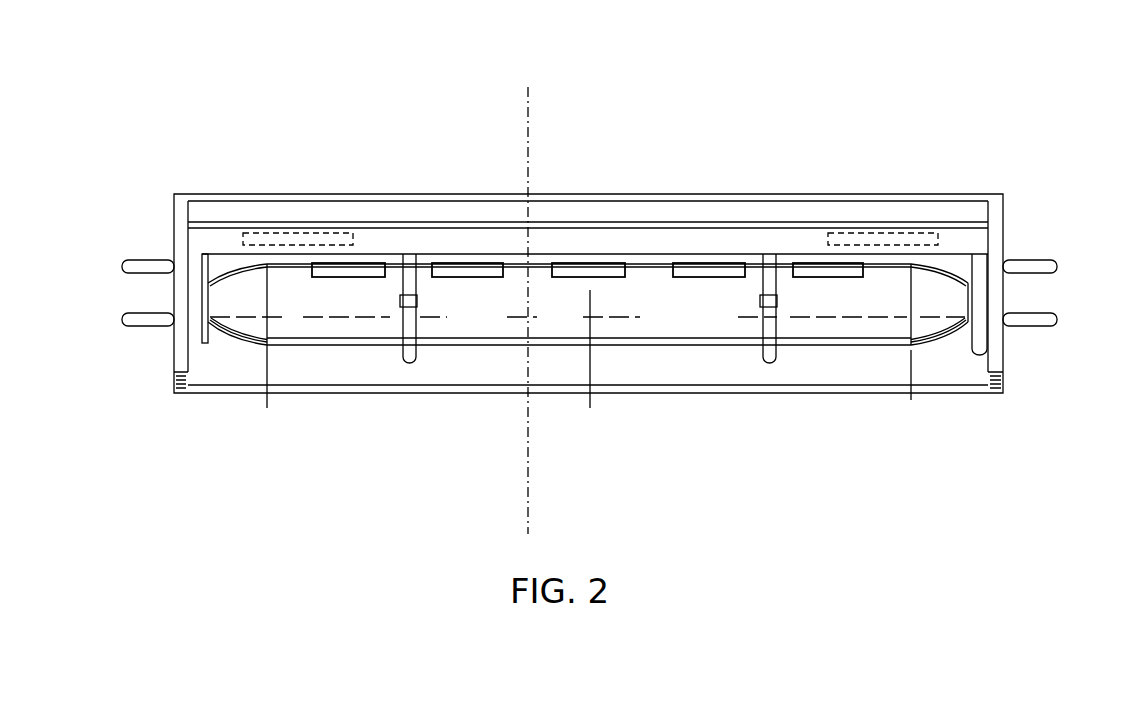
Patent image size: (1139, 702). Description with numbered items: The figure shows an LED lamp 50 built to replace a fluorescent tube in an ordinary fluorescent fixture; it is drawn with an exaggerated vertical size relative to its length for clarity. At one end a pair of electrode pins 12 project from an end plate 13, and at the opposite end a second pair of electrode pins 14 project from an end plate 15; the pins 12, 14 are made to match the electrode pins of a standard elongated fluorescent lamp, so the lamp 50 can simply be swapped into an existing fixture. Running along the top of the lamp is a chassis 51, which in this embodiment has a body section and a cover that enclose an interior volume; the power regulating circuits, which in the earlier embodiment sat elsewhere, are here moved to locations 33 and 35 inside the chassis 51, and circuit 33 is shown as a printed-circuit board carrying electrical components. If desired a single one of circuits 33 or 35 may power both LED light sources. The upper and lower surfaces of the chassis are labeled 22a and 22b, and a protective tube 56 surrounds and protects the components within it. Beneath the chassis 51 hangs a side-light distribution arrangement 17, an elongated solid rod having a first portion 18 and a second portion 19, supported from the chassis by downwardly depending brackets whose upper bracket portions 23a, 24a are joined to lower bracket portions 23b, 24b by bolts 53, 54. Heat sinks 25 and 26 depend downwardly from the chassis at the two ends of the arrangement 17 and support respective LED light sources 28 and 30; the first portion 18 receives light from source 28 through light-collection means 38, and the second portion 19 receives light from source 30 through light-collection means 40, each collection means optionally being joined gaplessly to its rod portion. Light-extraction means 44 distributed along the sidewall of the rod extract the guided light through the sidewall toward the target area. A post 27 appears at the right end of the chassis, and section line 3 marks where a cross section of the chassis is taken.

The lamp 50 is at (185, 125).
The end plate 13 is at (174, 215).
The end plate 15 is at (1003, 220).
The electrode pins 12 is at (122, 266).
The electrode pins 14 is at (1057, 267).
The heat sink 25 is at (193, 362).
The heat sink 26 is at (1003, 340).
The right support post 27 is at (980, 357).
The LED light source 28 is at (208, 282).
The LED light source 30 is at (955, 300).
The protective tube 56 is at (290, 194).
The chassis 51 is at (247, 214).
The lower board surface 22a is at (663, 240).
The upper board surface 22b is at (567, 222).
The power regulating circuit 33 is at (320, 232).
The power regulating circuit 35 is at (892, 232).
The light-extraction means 44 is at (348, 263).
The side-light distribution arrangement 17 is at (582, 325).
The light-collection means 38 is at (252, 345).
The light-collection means 40 is at (927, 342).
The upper bracket portion 23a is at (417, 291).
The lower bracket portion 23b is at (417, 352).
The upper bracket portion 24a is at (762, 291).
The lower bracket portion 24b is at (762, 352).
The bolt 53 is at (400, 299).
The bolt 54 is at (777, 300).
The first portion 18 is at (590, 408).
The second portion 19 is at (911, 400).
The section line 3- 3 is at (528, 87).